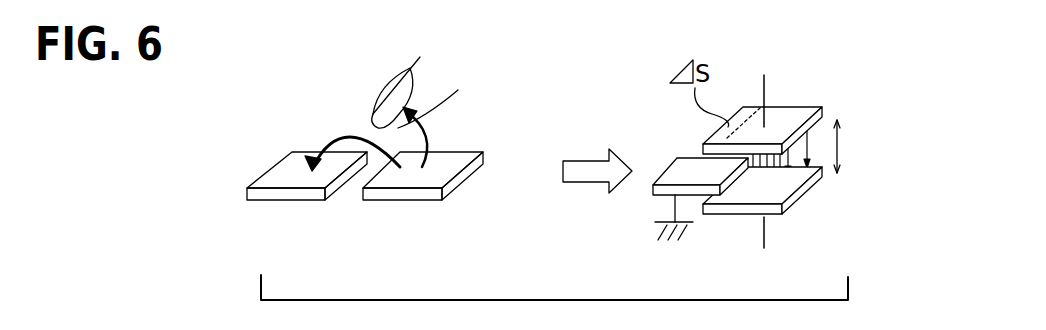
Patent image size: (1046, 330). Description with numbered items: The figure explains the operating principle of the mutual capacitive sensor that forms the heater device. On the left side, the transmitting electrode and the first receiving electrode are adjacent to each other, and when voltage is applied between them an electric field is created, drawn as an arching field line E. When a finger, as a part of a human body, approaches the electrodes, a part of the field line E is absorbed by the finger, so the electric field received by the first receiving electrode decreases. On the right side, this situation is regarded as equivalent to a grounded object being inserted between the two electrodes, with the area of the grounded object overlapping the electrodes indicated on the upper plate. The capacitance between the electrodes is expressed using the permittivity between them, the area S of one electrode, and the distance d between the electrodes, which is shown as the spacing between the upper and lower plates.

The field line E is at (341, 139).
The area of one electrode S is at (779, 125).
The distance between the electrodes d is at (847, 146).